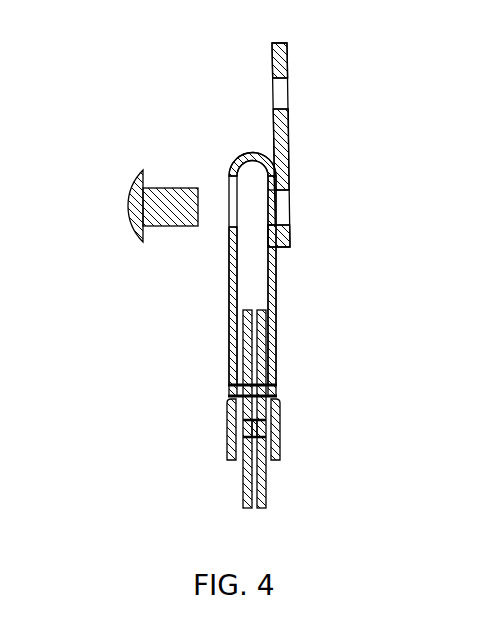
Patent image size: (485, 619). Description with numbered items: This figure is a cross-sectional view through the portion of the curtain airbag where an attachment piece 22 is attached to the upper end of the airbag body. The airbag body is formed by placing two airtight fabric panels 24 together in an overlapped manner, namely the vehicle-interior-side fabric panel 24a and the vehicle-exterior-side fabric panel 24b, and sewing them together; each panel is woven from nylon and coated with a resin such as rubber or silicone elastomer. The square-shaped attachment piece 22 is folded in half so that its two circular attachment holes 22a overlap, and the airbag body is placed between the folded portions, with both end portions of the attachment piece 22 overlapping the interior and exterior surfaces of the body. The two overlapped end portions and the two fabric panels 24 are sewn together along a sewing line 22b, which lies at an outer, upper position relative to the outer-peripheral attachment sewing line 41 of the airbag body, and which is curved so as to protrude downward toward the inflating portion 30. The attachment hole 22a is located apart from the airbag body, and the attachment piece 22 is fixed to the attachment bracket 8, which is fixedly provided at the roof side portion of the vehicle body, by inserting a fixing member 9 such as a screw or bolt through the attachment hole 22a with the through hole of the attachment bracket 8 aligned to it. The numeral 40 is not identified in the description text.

The attachment bracket 8 is at (289, 60).
The fixing member 9 is at (128, 208).
The attachment piece 22 is at (270, 278).
The attachment hole 22a is at (229, 207).
The sewing line 22b is at (277, 378).
The fabric panel 24 is at (259, 409).
The vehicle-interior-side fabric panel 24a is at (243, 494).
The vehicle-exterior-side fabric panel 24b is at (266, 493).
The inflating portion 30 is at (253, 509).
The gap 40 is at (255, 350).
The outer-peripheral attachment sewing line 41 is at (263, 429).